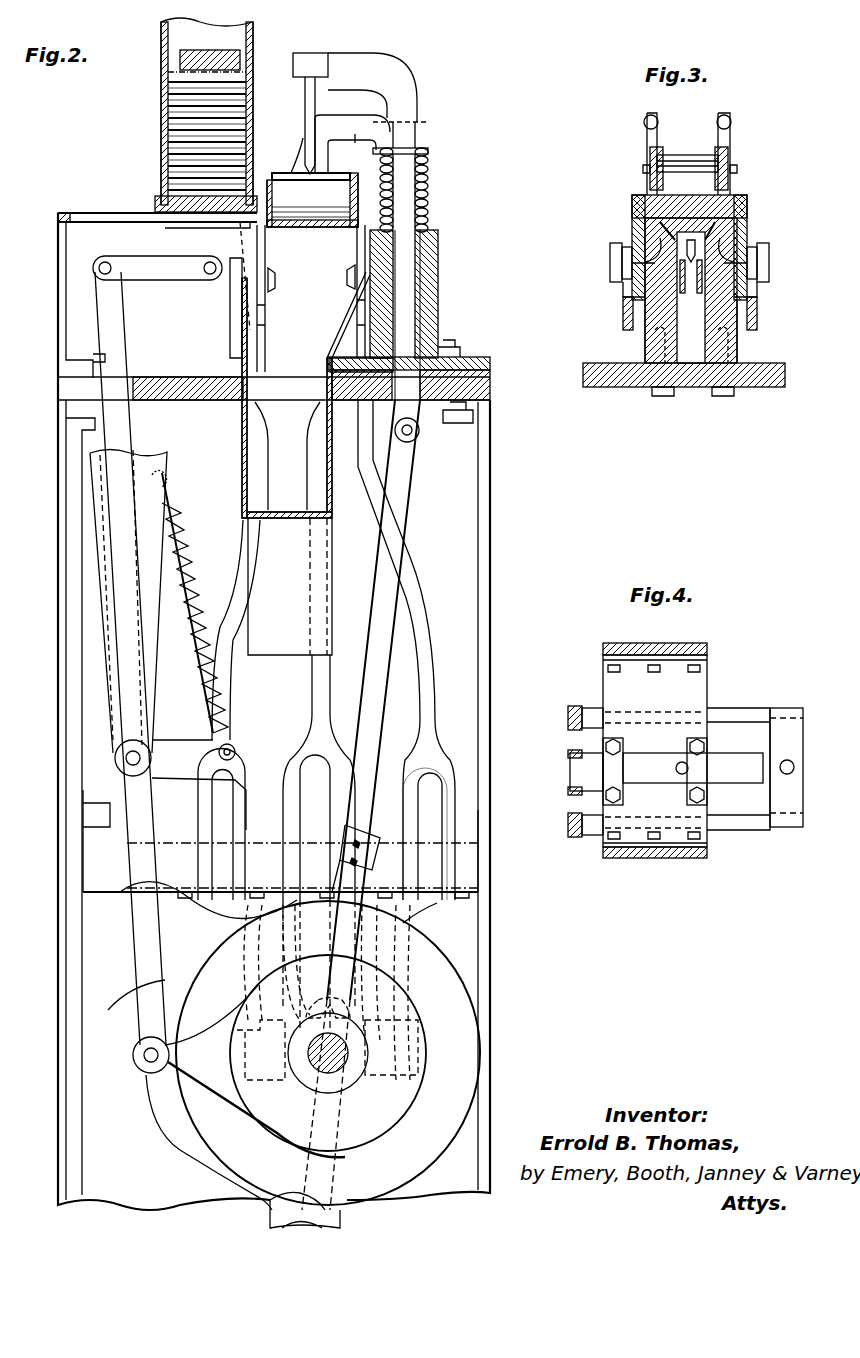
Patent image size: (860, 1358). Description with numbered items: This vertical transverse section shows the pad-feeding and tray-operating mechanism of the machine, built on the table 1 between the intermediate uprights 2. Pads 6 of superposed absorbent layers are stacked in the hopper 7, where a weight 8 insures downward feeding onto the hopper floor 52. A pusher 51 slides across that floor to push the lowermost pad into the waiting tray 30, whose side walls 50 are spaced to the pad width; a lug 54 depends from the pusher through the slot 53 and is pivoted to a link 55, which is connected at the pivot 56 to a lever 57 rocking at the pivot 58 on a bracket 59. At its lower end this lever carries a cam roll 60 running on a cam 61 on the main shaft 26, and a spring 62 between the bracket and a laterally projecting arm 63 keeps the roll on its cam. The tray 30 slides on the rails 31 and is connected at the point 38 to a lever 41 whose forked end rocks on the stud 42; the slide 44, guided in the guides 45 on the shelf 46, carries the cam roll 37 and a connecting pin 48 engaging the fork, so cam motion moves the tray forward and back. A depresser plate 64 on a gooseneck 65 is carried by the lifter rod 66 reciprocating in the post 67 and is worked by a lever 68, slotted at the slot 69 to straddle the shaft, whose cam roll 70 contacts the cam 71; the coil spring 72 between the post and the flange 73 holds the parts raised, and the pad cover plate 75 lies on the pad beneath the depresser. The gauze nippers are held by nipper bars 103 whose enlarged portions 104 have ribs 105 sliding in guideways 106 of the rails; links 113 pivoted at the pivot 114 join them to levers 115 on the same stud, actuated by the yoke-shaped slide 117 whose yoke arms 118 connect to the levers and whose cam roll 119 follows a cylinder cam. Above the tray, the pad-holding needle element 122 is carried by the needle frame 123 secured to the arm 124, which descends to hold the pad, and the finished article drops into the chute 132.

In FIG. 2, the table 1 is at (190, 377).
In FIG. 3, the table 1 is at (760, 385).
In FIG. 2, the intermediate uprights 2 is at (58, 598).
In FIG. 4, the intermediate uprights 2 is at (668, 648).
In FIG. 2, the pads 6 is at (175, 128).
In FIG. 2, the hopper 7 is at (253, 38).
In FIG. 2, the weight 8 is at (220, 58).
In FIG. 2, the main shaft 26 is at (334, 1073).
In FIG. 2, the tray 30 is at (318, 230).
In FIG. 3, the tray 30 is at (725, 205).
In FIG. 2, the rails 31 is at (256, 252).
In FIG. 3, the rails 31 is at (658, 338).
In FIG. 4, the cam roll 37 is at (680, 763).
In FIG. 3, the link connection 38 is at (691, 288).
In FIG. 2, the lever 41 is at (310, 700).
In FIG. 2, the stud 42 is at (420, 1052).
In FIG. 2, the slide 44 is at (305, 848).
In FIG. 4, the slide 44 is at (734, 760).
In FIG. 4, the guides 45 is at (620, 783).
In FIG. 2, the shelf 46 is at (170, 848).
In FIG. 4, the shelf 46 is at (700, 690).
In FIG. 2, the connecting pin 48 is at (290, 835).
In FIG. 4, the connecting pin 48 is at (568, 792).
In FIG. 2, the side walls 50 is at (278, 214).
In FIG. 2, the pusher 51 is at (264, 178).
In FIG. 2, the hopper floor 52 is at (76, 213).
In FIG. 2, the slot 53 is at (120, 204).
In FIG. 2, the lug 54 is at (185, 236).
In FIG. 2, the link 55 is at (150, 278).
In FIG. 2, the pivot 56 is at (103, 263).
In FIG. 2, the lever 57 is at (118, 333).
In FIG. 2, the pivot 58 is at (126, 762).
In FIG. 2, the bracket 59 is at (167, 464).
In FIG. 2, the cam roll 60 is at (136, 1063).
In FIG. 2, the cam 61 is at (203, 1078).
In FIG. 2, the spring 62 is at (176, 545).
In FIG. 2, the arm 63 is at (178, 746).
In FIG. 2, the depresser plate 64 is at (290, 160).
In FIG. 2, the gooseneck 65 is at (348, 125).
In FIG. 2, the lifter rod 66 is at (405, 243).
In FIG. 2, the post 67 is at (438, 280).
In FIG. 2, the lever 68 is at (404, 500).
In FIG. 2, the slot 69 is at (327, 1008).
In FIG. 2, the cam roll 70 is at (270, 1222).
In FIG. 2, the cam 71 is at (432, 1152).
In FIG. 2, the coil spring 72 is at (430, 180).
In FIG. 2, the flange 73 is at (428, 152).
In FIG. 3, the pad cover plate 75 is at (655, 192).
In FIG. 3, the nipper bars 103 is at (640, 205).
In FIG. 3, the enlarged portions 104 is at (642, 292).
In FIG. 3, the ribs 105 is at (652, 272).
In FIG. 3, the guideways 106 is at (655, 240).
In FIG. 3, the links 113 is at (630, 322).
In FIG. 3, the pivot 114 is at (612, 258).
In FIG. 2, the levers 115 is at (232, 572).
In FIG. 4, the yoke-shaped slide 117 is at (788, 722).
In FIG. 2, the yoke arms 118 is at (222, 880).
In FIG. 4, the yoke arms 118 is at (578, 716).
In FIG. 4, the cam roll 119 is at (786, 775).
In FIG. 2, the pin 122 is at (305, 103).
In FIG. 2, the frame 123 is at (310, 62).
In FIG. 2, the arm 124 is at (380, 62).
In FIG. 2, the chute 132 is at (285, 655).